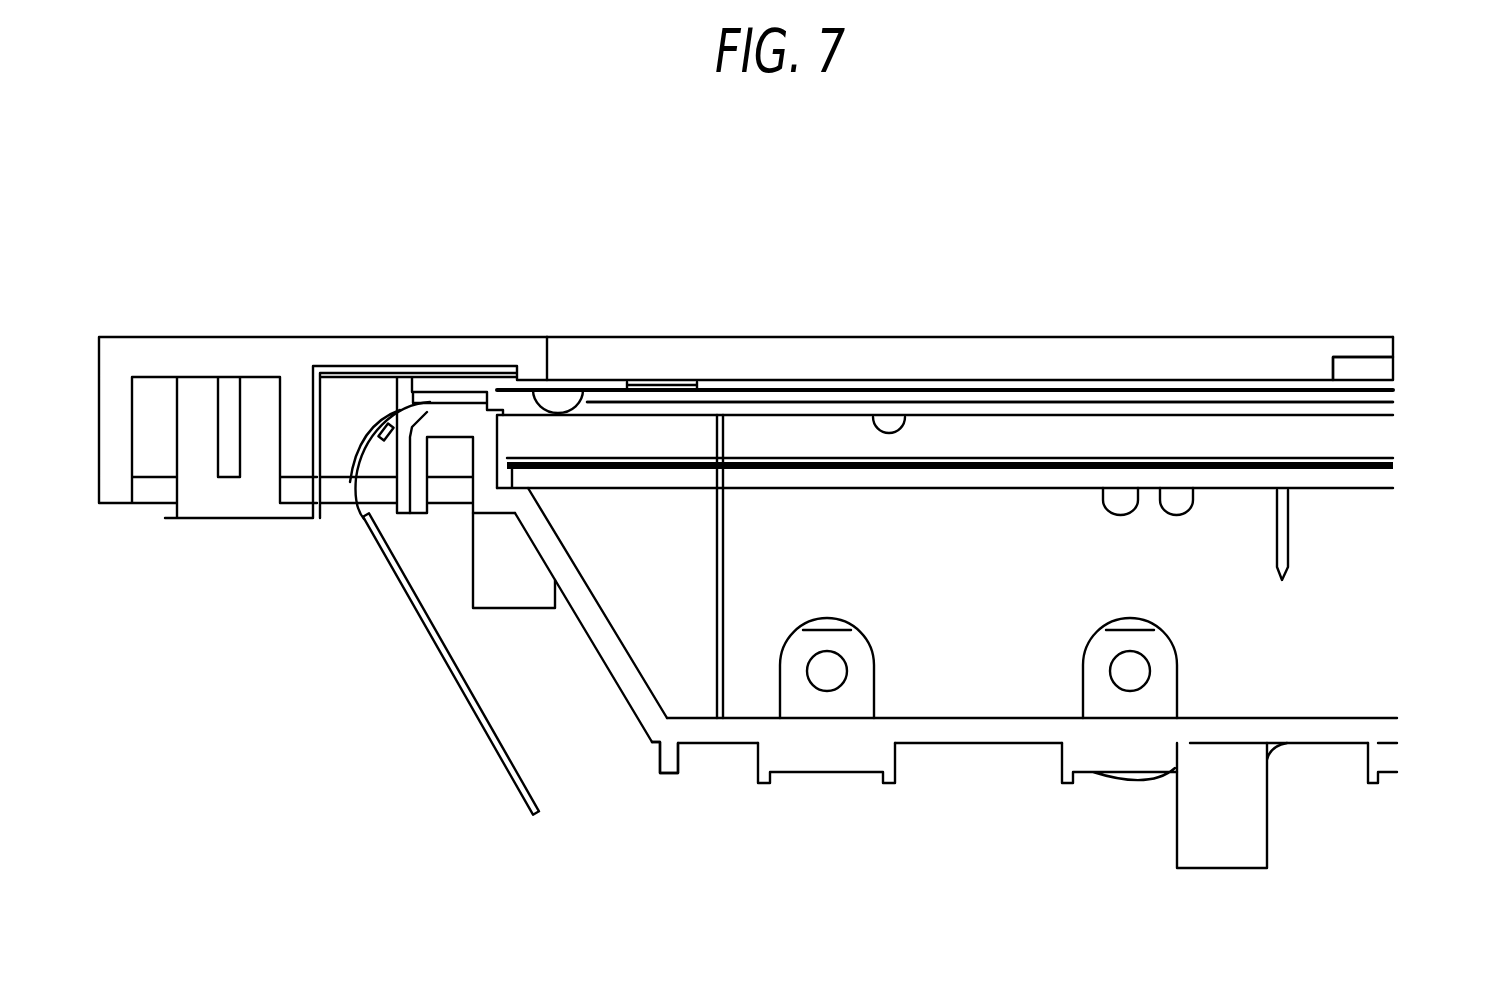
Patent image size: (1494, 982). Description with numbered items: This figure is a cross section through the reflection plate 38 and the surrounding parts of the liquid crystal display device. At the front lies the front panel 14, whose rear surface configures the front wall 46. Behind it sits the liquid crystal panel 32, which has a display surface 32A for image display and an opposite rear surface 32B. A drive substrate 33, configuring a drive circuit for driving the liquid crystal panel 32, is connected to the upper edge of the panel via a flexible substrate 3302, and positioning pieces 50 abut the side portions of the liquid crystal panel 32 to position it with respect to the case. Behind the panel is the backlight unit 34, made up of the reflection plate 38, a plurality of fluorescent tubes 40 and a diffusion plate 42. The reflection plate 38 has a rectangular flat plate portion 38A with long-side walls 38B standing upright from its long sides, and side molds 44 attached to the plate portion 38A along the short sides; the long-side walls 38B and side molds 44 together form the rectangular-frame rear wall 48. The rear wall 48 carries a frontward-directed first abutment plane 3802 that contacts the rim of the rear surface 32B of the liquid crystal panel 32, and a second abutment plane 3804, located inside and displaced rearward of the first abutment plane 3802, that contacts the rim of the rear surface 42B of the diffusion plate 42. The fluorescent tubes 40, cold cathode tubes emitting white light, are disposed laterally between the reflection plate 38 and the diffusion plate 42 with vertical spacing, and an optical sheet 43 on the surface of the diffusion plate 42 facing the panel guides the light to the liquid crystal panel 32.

The front panel 14 is at (590, 337).
The front wall 46 is at (530, 390).
The liquid crystal panel 32 is at (750, 380).
The display surface 32A is at (838, 381).
The rear surface 32B is at (905, 417).
The first abutment plane 3802 is at (997, 415).
The rear wall 48 is at (903, 324).
The diffusion plate 42 is at (1138, 487).
The rear surface of the diffusion plate 42B is at (1193, 487).
The optical sheet 43 is at (1277, 458).
The positioning piece 50 is at (1362, 357).
The side mold 44 is at (1333, 577).
The backlight unit 34 is at (1047, 748).
The flexible substrate 3302 is at (347, 487).
The drive substrate 33 is at (447, 668).
The second abutment plane 3804 is at (530, 488).
The long-side wall 38B is at (617, 625).
The fluorescent tube 40 is at (817, 691).
The plate portion 38A is at (955, 717).
The reflection plate 38 is at (1300, 706).